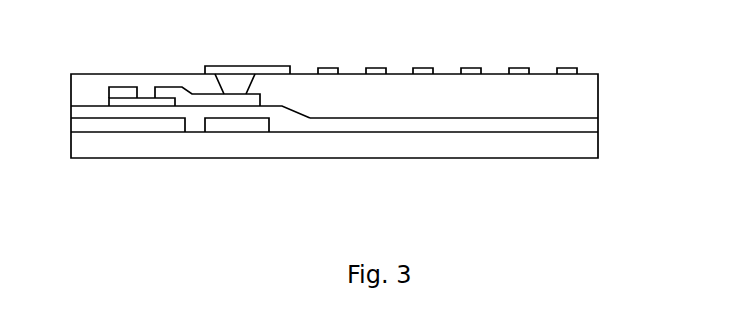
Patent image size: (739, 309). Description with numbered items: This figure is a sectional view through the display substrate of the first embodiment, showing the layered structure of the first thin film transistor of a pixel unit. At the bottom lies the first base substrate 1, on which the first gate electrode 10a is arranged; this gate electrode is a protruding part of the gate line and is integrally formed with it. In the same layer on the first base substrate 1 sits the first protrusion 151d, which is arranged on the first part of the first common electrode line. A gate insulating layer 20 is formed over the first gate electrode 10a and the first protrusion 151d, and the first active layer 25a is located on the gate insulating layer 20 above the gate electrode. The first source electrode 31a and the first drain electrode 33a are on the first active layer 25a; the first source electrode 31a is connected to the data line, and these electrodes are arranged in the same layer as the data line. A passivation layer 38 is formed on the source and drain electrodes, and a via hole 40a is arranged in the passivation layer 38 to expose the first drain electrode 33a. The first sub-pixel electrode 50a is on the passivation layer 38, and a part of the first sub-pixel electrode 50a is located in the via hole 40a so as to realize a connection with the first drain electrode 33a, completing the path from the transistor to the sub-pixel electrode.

The first base substrate 1 is at (573, 145).
The gate insulating layer 20 is at (583, 123).
The passivation layer 38 is at (570, 92).
The first gate electrode 10a is at (122, 123).
The first protrusion 151d is at (238, 123).
The first active layer 25a is at (146, 103).
The first source electrode 31a is at (116, 93).
The first drain electrode 33a is at (172, 94).
The via hole 40a is at (238, 83).
The first sub-pixel electrode 50a is at (423, 68).